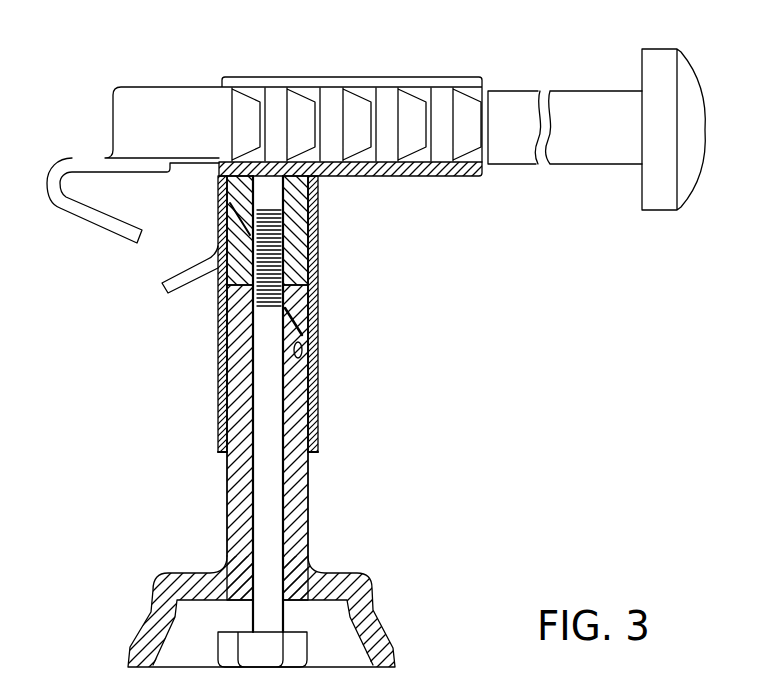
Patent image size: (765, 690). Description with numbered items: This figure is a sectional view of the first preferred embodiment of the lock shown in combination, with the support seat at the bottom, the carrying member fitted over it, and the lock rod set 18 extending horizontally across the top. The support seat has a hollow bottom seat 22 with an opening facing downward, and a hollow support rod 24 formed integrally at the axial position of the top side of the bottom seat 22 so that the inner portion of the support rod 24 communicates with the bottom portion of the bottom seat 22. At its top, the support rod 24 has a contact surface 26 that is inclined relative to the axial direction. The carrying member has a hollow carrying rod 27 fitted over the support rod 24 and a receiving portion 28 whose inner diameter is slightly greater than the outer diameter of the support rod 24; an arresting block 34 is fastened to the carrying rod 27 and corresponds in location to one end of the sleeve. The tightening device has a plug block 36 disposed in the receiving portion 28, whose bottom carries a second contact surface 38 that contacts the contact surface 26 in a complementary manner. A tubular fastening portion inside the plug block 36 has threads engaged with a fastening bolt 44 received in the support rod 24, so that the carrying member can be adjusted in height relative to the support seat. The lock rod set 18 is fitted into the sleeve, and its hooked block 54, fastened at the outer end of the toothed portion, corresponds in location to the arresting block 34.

The lock rod set 18 is at (179, 75).
The bottom seat 22 is at (365, 602).
The support rod 24 is at (300, 483).
The contact surface 26 is at (300, 363).
The carrying rod 27 is at (217, 425).
The receiving portion 28 is at (218, 383).
The arresting block 34 is at (177, 287).
The plug block 36 is at (293, 250).
The second contact surface 38 is at (307, 330).
The fastening bolt 44 is at (267, 567).
The hooked block 54 is at (103, 222).